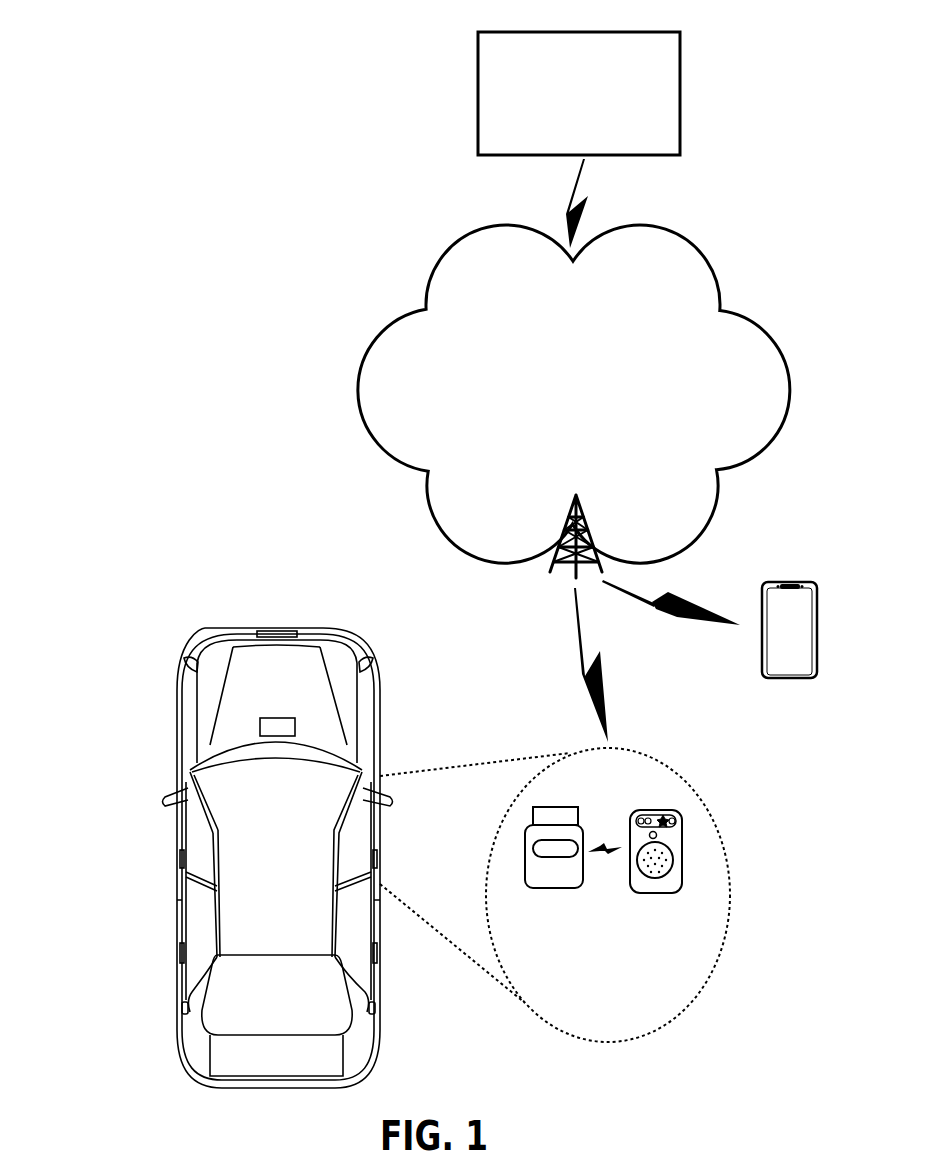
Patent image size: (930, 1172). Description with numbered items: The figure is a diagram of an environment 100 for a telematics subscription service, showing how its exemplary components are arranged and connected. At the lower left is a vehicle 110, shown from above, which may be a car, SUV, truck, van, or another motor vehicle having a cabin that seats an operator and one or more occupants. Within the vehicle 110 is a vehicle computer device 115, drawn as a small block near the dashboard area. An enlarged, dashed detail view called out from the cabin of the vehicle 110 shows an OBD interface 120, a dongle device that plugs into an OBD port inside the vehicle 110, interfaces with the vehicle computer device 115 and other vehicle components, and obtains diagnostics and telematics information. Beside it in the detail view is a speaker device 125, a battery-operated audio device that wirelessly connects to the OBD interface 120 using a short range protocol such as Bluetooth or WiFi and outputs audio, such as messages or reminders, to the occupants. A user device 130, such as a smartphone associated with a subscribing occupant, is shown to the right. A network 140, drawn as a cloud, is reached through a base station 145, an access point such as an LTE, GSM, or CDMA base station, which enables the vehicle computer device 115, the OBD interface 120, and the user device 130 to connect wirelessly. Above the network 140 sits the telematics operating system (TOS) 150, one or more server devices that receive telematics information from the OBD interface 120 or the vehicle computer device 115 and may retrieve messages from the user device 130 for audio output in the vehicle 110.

The environment 100 is at (138, 32).
The vehicle 110 is at (275, 628).
The vehicle computer device 115 is at (260, 723).
The on-board diagnostics (OBD) interface 120 is at (557, 888).
The speaker device 125 is at (655, 893).
The user device 130 is at (790, 678).
The network 140 is at (574, 394).
The base station 145 is at (585, 519).
The telematics operating system (TOS) 150 is at (579, 93).